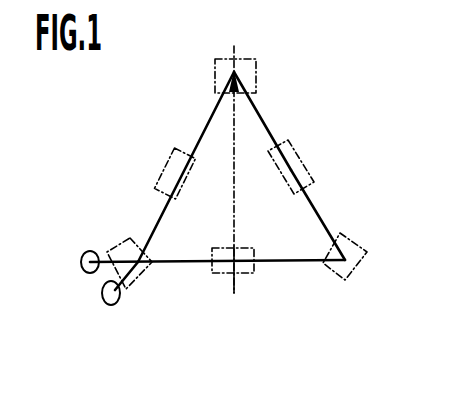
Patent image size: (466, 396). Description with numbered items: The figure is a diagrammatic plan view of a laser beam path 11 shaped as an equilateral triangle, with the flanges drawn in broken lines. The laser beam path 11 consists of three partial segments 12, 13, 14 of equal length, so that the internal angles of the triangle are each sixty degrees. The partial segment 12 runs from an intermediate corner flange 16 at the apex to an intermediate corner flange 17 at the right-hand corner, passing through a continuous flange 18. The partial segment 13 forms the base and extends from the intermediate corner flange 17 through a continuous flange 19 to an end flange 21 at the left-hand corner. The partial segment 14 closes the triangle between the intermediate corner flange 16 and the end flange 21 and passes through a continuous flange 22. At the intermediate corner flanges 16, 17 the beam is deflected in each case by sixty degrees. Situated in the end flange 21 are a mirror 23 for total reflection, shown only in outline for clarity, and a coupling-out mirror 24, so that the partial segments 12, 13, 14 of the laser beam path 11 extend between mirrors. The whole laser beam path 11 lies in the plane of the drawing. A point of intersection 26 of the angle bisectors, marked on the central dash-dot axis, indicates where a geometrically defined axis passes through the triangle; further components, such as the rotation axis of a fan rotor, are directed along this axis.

The laser beam path 11 is at (262, 118).
The partial segment 12 is at (318, 215).
The partial segment 13 is at (280, 262).
The partial segment 14 is at (206, 122).
The intermediate corner flange 16 is at (233, 56).
The intermediate corner flange 17 is at (355, 270).
The continuous flange 18 is at (308, 163).
The continuous flange 19 is at (223, 276).
The end flange 21 is at (126, 237).
The continuous flange 22 is at (163, 161).
The mirror for total reflection 23 is at (80, 263).
The coupling-out mirror 24 is at (104, 306).
The point of intersection 26 is at (236, 200).